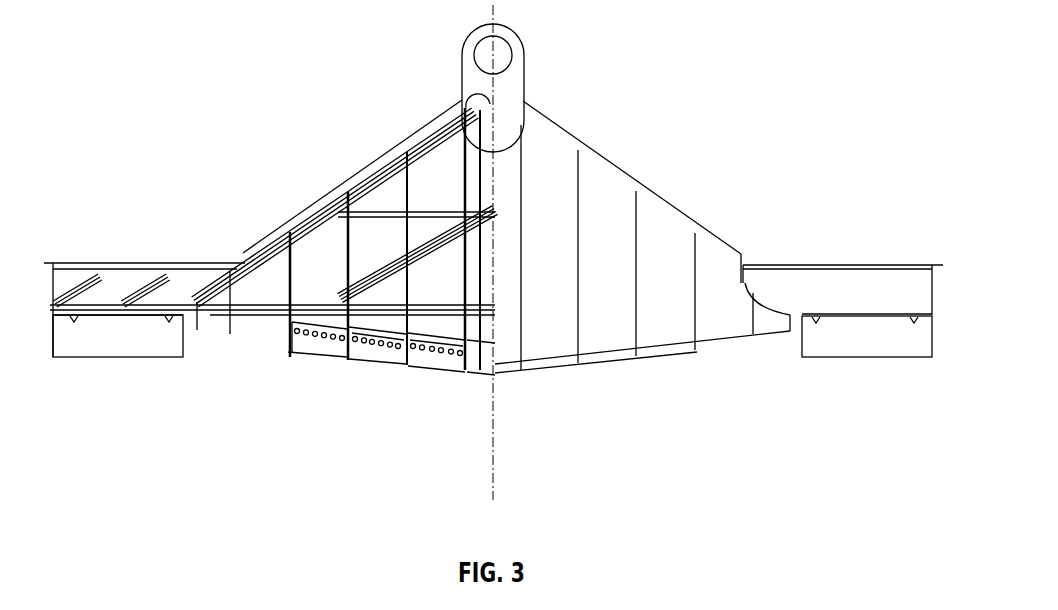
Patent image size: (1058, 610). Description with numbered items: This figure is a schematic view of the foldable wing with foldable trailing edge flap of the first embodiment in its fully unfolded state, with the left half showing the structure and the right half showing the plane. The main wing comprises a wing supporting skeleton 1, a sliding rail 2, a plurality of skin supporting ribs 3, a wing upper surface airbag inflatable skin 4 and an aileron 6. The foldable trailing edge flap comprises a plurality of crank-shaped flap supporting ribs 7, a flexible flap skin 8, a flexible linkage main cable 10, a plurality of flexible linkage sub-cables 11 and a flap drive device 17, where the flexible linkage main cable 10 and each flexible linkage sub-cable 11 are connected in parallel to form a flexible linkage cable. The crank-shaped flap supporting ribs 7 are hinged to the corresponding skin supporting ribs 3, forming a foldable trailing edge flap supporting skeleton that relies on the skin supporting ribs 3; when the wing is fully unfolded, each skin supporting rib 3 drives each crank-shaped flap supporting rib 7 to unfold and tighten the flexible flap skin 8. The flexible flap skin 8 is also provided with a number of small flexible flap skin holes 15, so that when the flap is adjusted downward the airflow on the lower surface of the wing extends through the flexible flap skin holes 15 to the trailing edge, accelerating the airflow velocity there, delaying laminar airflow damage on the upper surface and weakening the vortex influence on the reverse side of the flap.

The wing supporting skeleton 1 is at (269, 235).
The sliding rail 2 is at (462, 88).
The skin supporting ribs 3 is at (345, 198).
The wing upper surface airbag inflatable skin 4 is at (631, 205).
The aileron 6 is at (843, 343).
The crank-shaped flap supporting ribs 7 is at (363, 368).
The flexible flap skin 8 is at (642, 354).
The flexible linkage main cable 10 is at (362, 398).
The flexible linkage sub-cables 11 is at (362, 421).
The flexible flap skin holes 15 is at (229, 406).
The flap drive device 17 is at (440, 406).